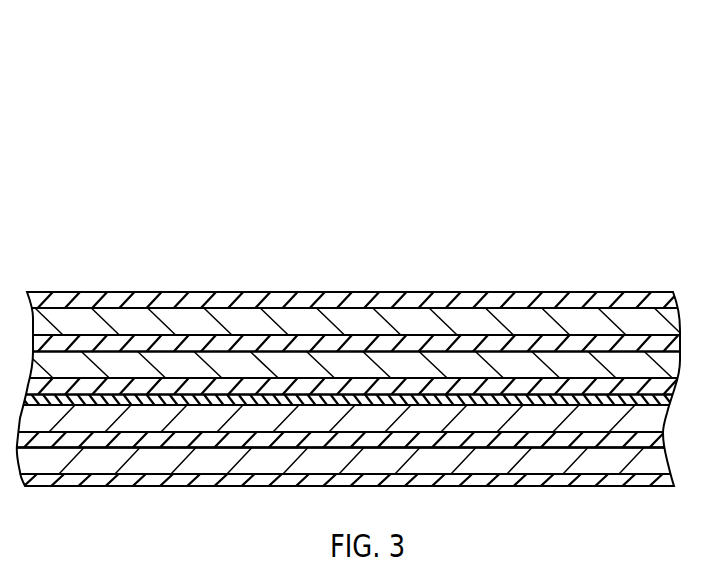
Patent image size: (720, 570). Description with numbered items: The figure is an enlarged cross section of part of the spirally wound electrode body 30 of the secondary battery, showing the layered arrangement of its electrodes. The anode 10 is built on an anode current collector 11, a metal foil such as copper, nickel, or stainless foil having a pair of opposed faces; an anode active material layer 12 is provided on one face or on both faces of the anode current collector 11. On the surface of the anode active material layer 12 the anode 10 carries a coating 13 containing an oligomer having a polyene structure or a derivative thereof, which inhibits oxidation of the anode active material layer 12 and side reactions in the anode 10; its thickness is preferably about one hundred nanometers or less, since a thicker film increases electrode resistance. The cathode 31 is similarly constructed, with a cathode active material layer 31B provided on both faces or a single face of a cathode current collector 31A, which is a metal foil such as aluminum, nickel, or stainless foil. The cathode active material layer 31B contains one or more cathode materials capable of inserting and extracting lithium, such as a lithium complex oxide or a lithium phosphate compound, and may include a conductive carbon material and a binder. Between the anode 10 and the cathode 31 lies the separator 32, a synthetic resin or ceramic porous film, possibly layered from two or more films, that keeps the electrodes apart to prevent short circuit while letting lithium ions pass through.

The spirally wound electrode body 30 is at (608, 127).
The cathode 31 is at (533, 221).
The cathode current collector 31A is at (353, 335).
The cathode active material layer 31B is at (468, 363).
The separator 32 is at (575, 387).
The anode 10 is at (245, 221).
The anode current collector 11 is at (68, 443).
The anode active material layer 12 is at (98, 460).
The coating 13 is at (185, 480).